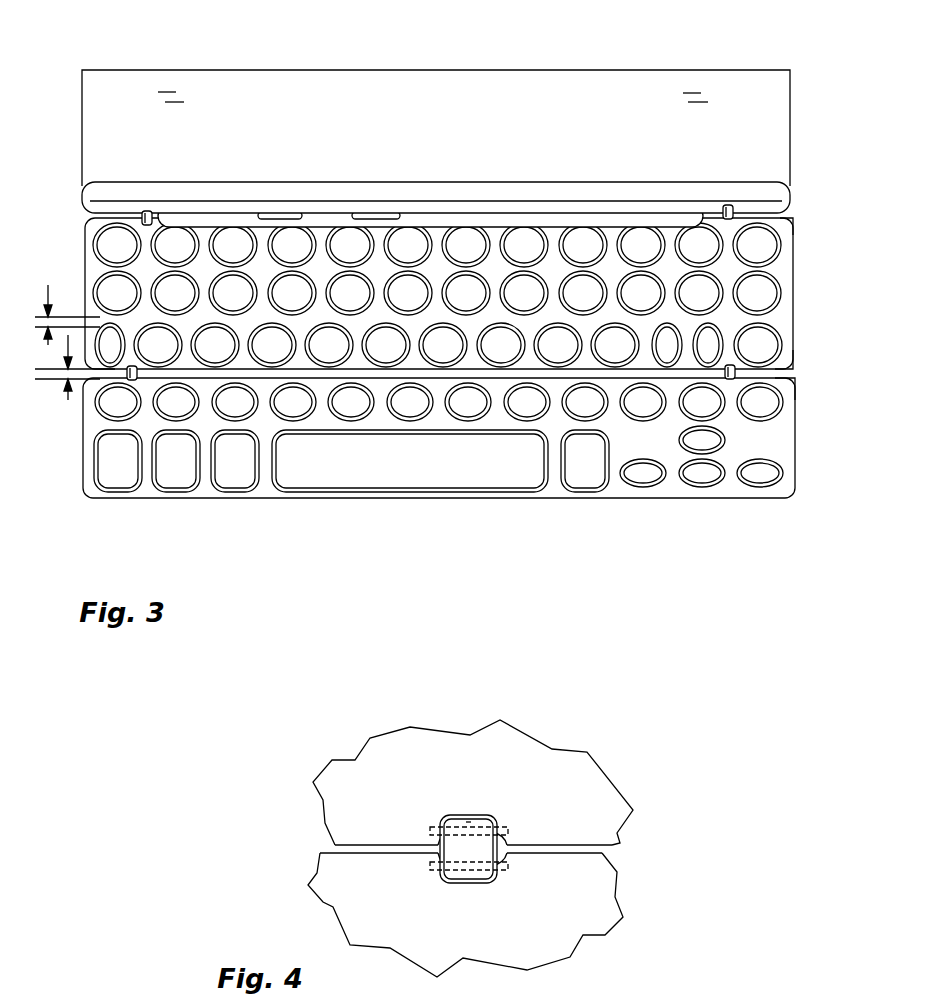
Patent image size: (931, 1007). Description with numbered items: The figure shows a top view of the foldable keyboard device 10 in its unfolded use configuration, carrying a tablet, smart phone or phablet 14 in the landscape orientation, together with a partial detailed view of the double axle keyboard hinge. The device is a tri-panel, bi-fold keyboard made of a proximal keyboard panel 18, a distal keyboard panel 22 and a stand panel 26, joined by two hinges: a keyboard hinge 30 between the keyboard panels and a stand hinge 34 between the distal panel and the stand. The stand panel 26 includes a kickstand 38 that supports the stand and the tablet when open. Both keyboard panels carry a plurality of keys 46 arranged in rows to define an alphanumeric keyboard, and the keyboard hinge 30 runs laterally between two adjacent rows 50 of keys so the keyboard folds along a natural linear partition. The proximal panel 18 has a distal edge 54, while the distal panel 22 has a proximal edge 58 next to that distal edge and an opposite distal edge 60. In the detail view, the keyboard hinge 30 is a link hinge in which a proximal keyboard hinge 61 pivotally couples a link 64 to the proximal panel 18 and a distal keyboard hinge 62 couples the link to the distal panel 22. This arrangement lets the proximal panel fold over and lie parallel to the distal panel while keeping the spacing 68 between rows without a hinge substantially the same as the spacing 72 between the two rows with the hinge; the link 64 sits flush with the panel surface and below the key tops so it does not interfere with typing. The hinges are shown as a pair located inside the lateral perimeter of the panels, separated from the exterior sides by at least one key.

In FIG. 3, the foldable keyboard device 10 is at (383, 532).
In FIG. 3, the tablet 14 is at (453, 205).
In FIG. 3, the proximal keyboard panel 18 is at (782, 448).
In FIG. 4, the proximal keyboard panel 18 is at (345, 890).
In FIG. 3, the distal keyboard panel 22 is at (790, 300).
In FIG. 4, the distal keyboard panel 22 is at (348, 778).
In FIG. 3, the stand panel 26 is at (783, 190).
In FIG. 3, the keyboard hinge 30 is at (730, 380).
In FIG. 4, the keyboard hinge 30 is at (512, 793).
In FIG. 3, the stand hinge 34 is at (728, 205).
In FIG. 3, the kickstand 38 is at (749, 78).
In FIG. 3, the keys 46 is at (237, 480).
In FIG. 3, the adjacent rows of keys 50 is at (170, 348).
In FIG. 3, the distal edge of proximal keyboard panel 54 is at (787, 390).
In FIG. 3, the proximal edge of distal keyboard panel 58 is at (790, 360).
In FIG. 3, the distal edge of distal keyboard panel 60 is at (790, 237).
In FIG. 4, the proximal keyboard hinge 61 is at (507, 863).
In FIG. 4, the distal keyboard hinge 62 is at (507, 833).
In FIG. 4, the link 64 is at (467, 818).
In FIG. 3, the spacing 68 is at (66, 303).
In FIG. 3, the gap 72 is at (75, 381).